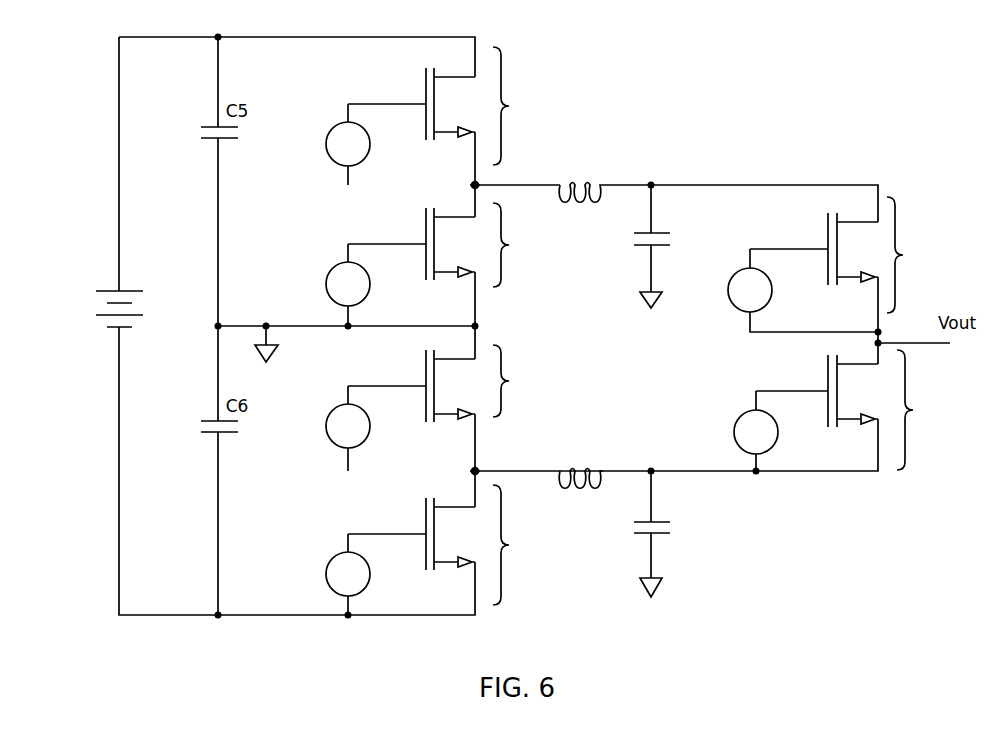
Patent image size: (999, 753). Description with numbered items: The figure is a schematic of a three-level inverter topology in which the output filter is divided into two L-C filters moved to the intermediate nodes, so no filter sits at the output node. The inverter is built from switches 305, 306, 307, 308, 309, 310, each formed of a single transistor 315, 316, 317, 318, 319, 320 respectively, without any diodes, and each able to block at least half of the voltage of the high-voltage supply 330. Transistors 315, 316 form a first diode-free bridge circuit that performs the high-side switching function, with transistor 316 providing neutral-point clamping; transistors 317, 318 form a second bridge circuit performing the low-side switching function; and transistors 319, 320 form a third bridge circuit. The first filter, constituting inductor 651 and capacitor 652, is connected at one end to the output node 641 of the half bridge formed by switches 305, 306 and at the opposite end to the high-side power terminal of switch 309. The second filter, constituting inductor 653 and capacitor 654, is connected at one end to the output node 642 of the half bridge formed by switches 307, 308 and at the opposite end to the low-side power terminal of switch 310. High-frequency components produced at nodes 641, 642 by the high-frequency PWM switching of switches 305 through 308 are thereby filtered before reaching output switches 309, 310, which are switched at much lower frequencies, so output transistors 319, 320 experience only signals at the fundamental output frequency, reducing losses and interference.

The switch 305 is at (523, 106).
The switch 306 is at (523, 245).
The switch 307 is at (523, 381).
The switch 308 is at (523, 545).
The output switch 309 is at (919, 255).
The output switch 310 is at (931, 410).
The transistor 315 is at (427, 91).
The transistor 316 is at (427, 231).
The transistor 317 is at (427, 378).
The transistor 318 is at (427, 521).
The output transistor 319 is at (829, 245).
The output transistor 320 is at (829, 383).
The high-voltage supply 330 is at (96, 302).
The output node 641 is at (482, 183).
The output node 642 is at (482, 470).
The inductor 651 is at (585, 183).
The capacitor 652 is at (657, 230).
The inductor 653 is at (585, 470).
The capacitor 654 is at (657, 519).